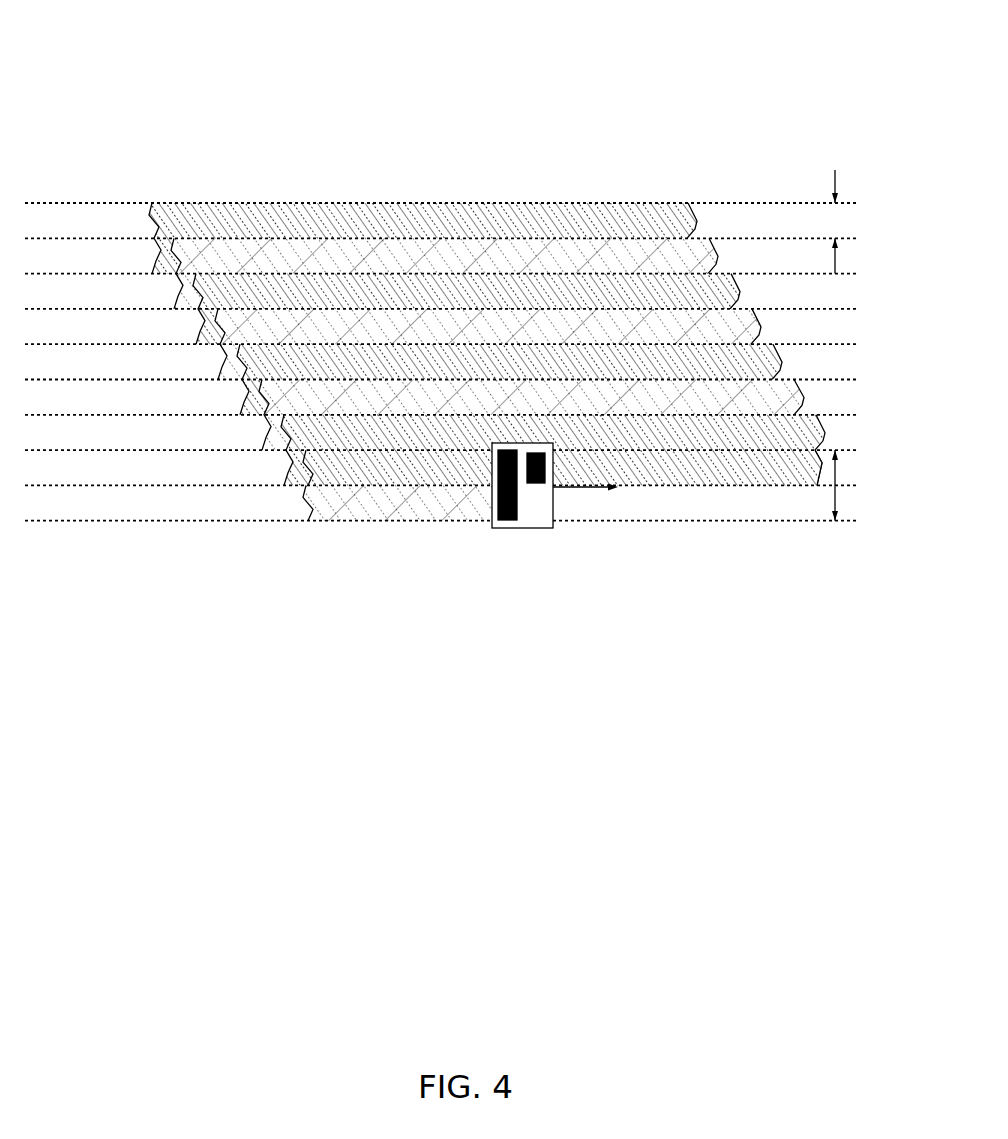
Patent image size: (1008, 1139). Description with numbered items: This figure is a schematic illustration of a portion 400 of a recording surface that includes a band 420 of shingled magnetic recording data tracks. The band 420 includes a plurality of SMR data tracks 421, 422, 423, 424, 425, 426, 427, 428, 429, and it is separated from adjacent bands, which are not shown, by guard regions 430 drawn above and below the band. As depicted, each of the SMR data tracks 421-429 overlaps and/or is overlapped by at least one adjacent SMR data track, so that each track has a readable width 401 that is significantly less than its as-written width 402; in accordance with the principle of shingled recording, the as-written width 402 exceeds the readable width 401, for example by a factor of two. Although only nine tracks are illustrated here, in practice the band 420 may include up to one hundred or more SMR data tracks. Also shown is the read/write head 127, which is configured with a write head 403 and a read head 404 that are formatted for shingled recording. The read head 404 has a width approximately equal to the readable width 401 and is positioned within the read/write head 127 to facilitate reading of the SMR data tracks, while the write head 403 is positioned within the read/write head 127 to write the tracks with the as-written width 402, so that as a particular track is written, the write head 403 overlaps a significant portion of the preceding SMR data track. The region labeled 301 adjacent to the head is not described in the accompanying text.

The portion of recording surface 400 is at (158, 62).
The band 420 is at (277, 203).
The SMR data track 421 is at (441, 218).
The SMR data track 422 is at (441, 253).
The SMR data track 423 is at (441, 289).
The SMR data track 424 is at (441, 324).
The SMR data track 425 is at (441, 359).
The SMR data track 426 is at (441, 395).
The SMR data track 427 is at (441, 430).
The SMR data track 428 is at (441, 465).
The SMR data track 429 is at (441, 502).
The guard regions 430 is at (482, 144).
The readable width 401 is at (833, 172).
The as-written width 402 is at (837, 498).
The currently written track 301 is at (415, 498).
The read/write head 127 is at (535, 529).
The write head 403 is at (507, 521).
The read head 404 is at (536, 484).